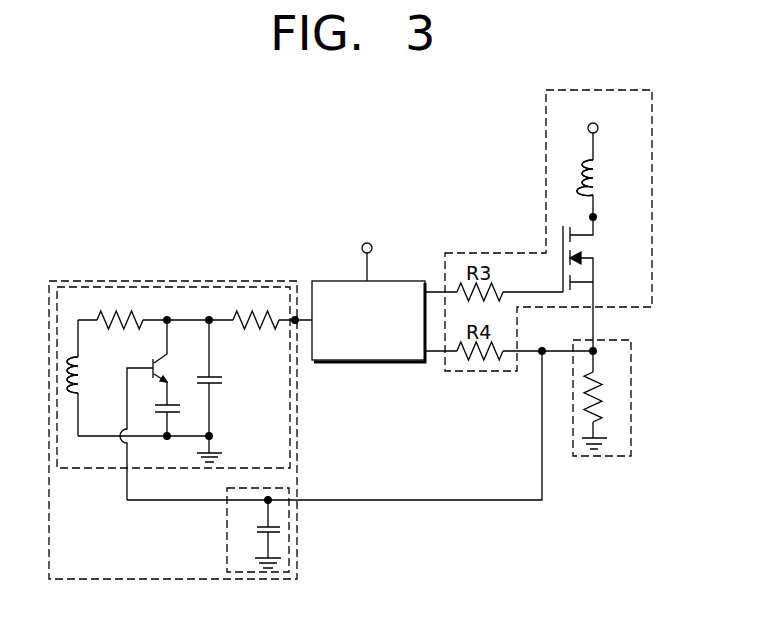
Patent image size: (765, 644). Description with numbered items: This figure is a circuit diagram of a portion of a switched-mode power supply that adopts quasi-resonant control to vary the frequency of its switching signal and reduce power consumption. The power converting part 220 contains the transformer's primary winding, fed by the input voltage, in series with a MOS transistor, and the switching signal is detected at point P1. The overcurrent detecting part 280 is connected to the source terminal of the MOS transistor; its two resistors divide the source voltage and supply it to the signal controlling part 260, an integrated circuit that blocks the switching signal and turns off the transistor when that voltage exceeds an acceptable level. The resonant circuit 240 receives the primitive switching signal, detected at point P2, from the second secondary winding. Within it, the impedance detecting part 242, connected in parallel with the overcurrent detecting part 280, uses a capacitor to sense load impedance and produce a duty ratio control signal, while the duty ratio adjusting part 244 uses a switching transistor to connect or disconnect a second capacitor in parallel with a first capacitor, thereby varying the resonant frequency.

The power converting part 220 is at (632, 90).
The resonant circuit 240 is at (247, 281).
The impedance detecting part 242 is at (289, 553).
The duty ratio adjusting part 244 is at (107, 468).
The signal controlling part 260 is at (399, 281).
The overcurrent detecting part 280 is at (632, 430).
The point P1 is at (601, 217).
The point P2 is at (295, 326).